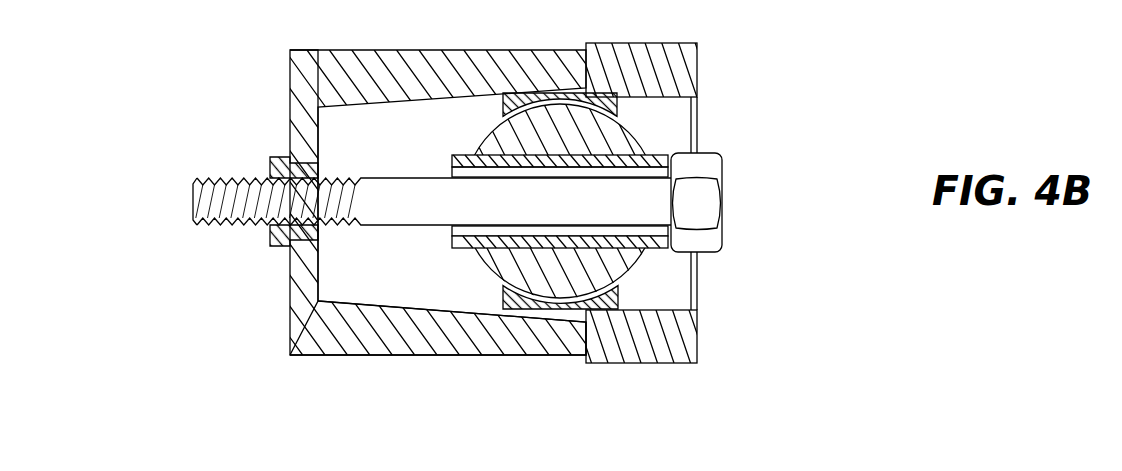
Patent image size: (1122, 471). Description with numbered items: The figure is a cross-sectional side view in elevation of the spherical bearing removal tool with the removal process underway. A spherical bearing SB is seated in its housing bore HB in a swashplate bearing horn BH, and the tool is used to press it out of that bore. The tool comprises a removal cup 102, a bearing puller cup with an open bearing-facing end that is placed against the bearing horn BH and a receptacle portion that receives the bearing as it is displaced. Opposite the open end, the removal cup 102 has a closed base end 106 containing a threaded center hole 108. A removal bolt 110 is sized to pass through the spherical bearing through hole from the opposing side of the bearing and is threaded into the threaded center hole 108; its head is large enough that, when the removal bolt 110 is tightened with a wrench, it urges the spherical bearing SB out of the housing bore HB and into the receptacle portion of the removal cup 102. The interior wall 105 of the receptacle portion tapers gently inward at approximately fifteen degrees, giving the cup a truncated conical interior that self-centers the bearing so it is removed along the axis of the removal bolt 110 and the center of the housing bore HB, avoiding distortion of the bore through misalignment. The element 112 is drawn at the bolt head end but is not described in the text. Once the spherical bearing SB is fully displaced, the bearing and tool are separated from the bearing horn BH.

The removal cup 102 is at (439, 203).
The interior wall 105 is at (400, 303).
The closed base end 106 is at (290, 107).
The threaded center hole 108 is at (270, 234).
The removal bolt 110 is at (637, 148).
The nut 112 is at (703, 153).
The swashplate bearing horn BH is at (640, 43).
The housing bore HB is at (693, 97).
The spherical bearing SB is at (667, 108).